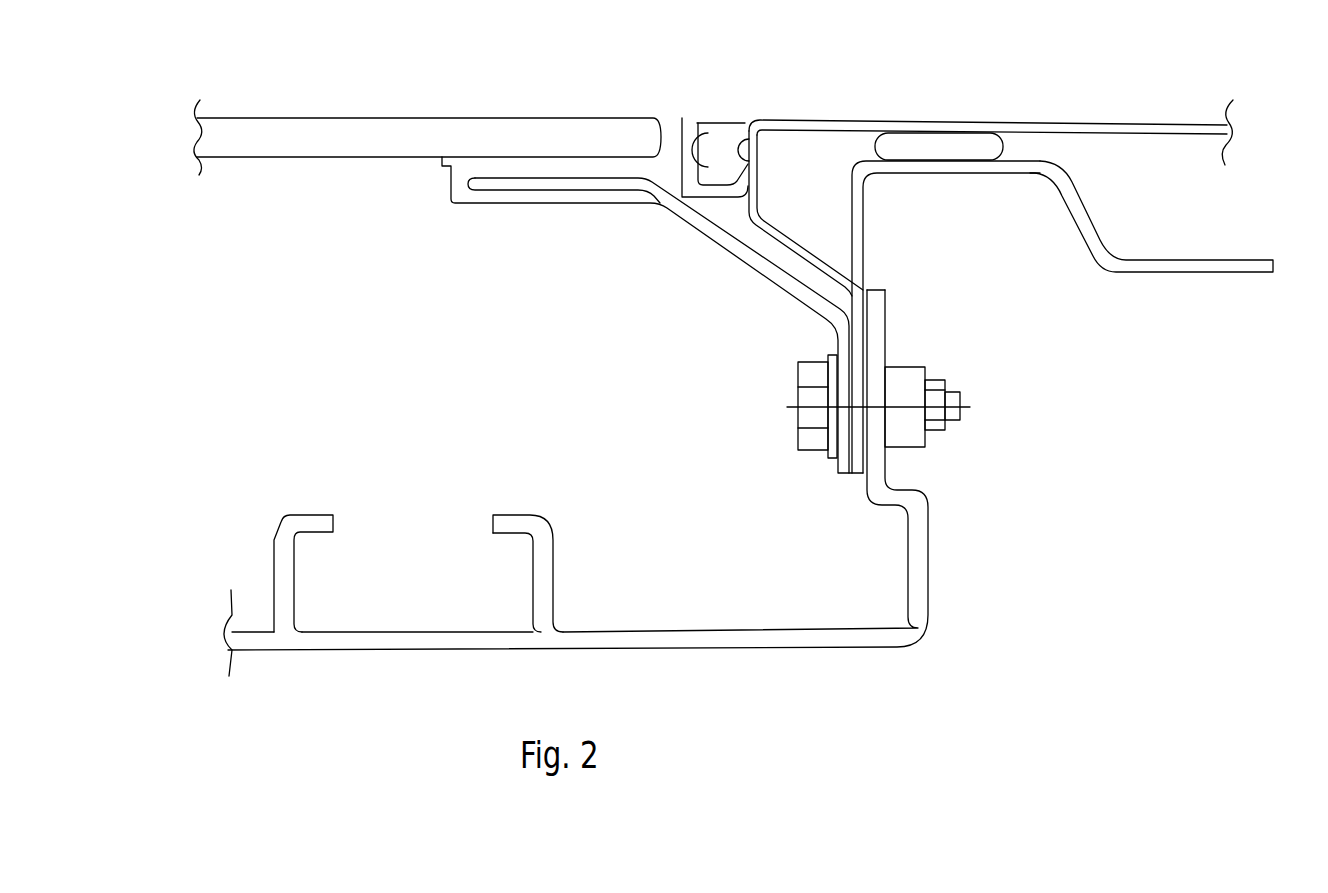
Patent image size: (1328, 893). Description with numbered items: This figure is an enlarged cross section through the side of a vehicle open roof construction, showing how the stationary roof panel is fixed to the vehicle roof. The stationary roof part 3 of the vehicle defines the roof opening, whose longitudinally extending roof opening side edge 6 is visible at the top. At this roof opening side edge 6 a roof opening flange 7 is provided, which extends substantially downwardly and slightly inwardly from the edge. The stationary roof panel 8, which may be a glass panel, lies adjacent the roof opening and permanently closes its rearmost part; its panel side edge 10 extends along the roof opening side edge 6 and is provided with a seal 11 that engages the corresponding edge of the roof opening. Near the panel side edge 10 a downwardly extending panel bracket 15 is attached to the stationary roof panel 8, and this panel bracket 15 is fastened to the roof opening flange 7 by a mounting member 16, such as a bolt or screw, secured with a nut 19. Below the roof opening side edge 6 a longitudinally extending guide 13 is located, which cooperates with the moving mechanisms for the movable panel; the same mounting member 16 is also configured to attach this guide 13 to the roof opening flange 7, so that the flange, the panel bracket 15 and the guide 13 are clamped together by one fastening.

The stationary roof part 3 is at (948, 125).
The roof opening side edge 6 is at (742, 125).
The roof opening flange 7 is at (788, 238).
The stationary roof panel 8 is at (425, 128).
The panel side edge 10 is at (703, 130).
The seal 11 is at (716, 125).
The guide 13 is at (637, 632).
The panel bracket 15 is at (703, 235).
The mounting member 16 is at (807, 380).
The nut 19 is at (908, 375).